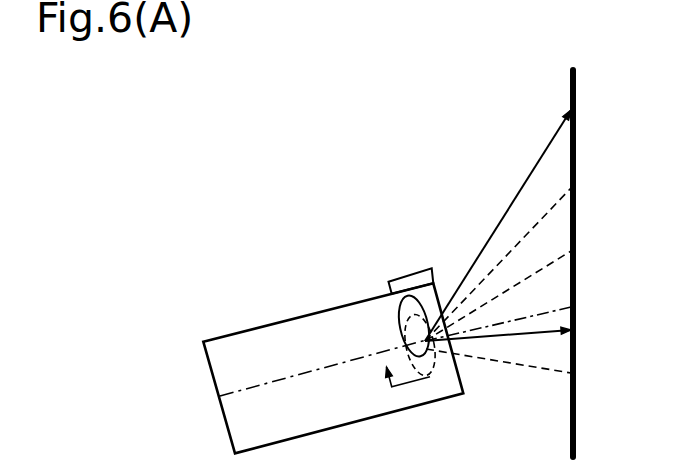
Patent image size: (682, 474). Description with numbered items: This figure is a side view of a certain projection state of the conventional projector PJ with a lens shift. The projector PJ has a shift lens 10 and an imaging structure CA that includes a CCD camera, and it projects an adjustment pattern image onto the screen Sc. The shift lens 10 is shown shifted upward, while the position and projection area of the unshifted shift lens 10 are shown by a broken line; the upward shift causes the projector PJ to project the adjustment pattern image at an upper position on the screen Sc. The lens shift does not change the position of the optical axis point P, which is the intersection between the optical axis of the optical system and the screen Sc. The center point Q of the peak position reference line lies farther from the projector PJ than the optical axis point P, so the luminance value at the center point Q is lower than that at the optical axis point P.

The projector PJ is at (205, 300).
The imaging structure CA is at (402, 272).
The shift lens 10 is at (400, 313).
The screen Sc is at (577, 142).
The optical axis point P is at (571, 308).
The center point Q is at (571, 244).